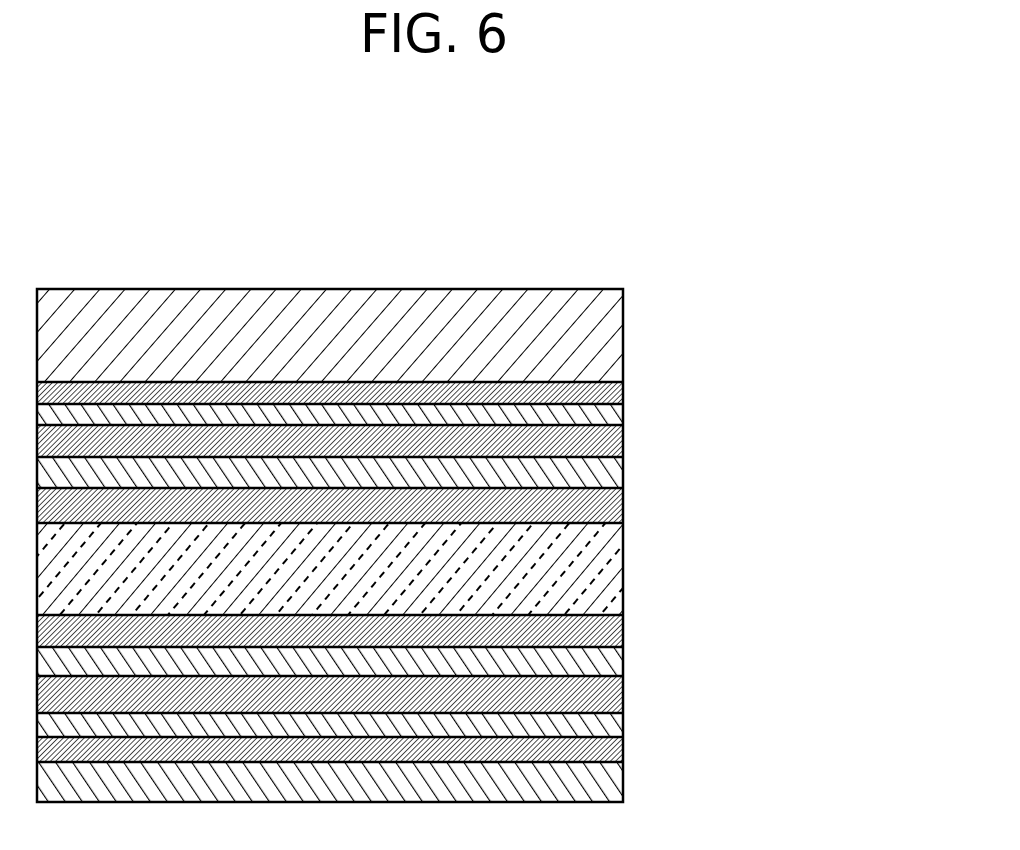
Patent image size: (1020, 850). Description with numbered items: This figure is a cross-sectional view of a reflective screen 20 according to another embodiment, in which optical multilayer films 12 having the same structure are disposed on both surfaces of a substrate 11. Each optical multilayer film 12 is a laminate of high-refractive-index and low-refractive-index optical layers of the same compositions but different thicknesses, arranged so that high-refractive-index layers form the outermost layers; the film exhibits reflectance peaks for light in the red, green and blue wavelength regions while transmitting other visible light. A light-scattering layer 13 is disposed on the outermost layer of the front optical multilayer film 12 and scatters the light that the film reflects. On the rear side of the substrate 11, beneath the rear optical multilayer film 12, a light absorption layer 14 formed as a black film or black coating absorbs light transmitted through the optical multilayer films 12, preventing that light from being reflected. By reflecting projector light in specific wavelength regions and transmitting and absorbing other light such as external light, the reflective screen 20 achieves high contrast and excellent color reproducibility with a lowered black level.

The reflective screen 20 is at (503, 254).
The light-scattering layer 13 is at (607, 337).
The optical multilayer film 12 is at (465, 540).
The substrate 11 is at (607, 578).
The light absorption layer 14 is at (612, 788).